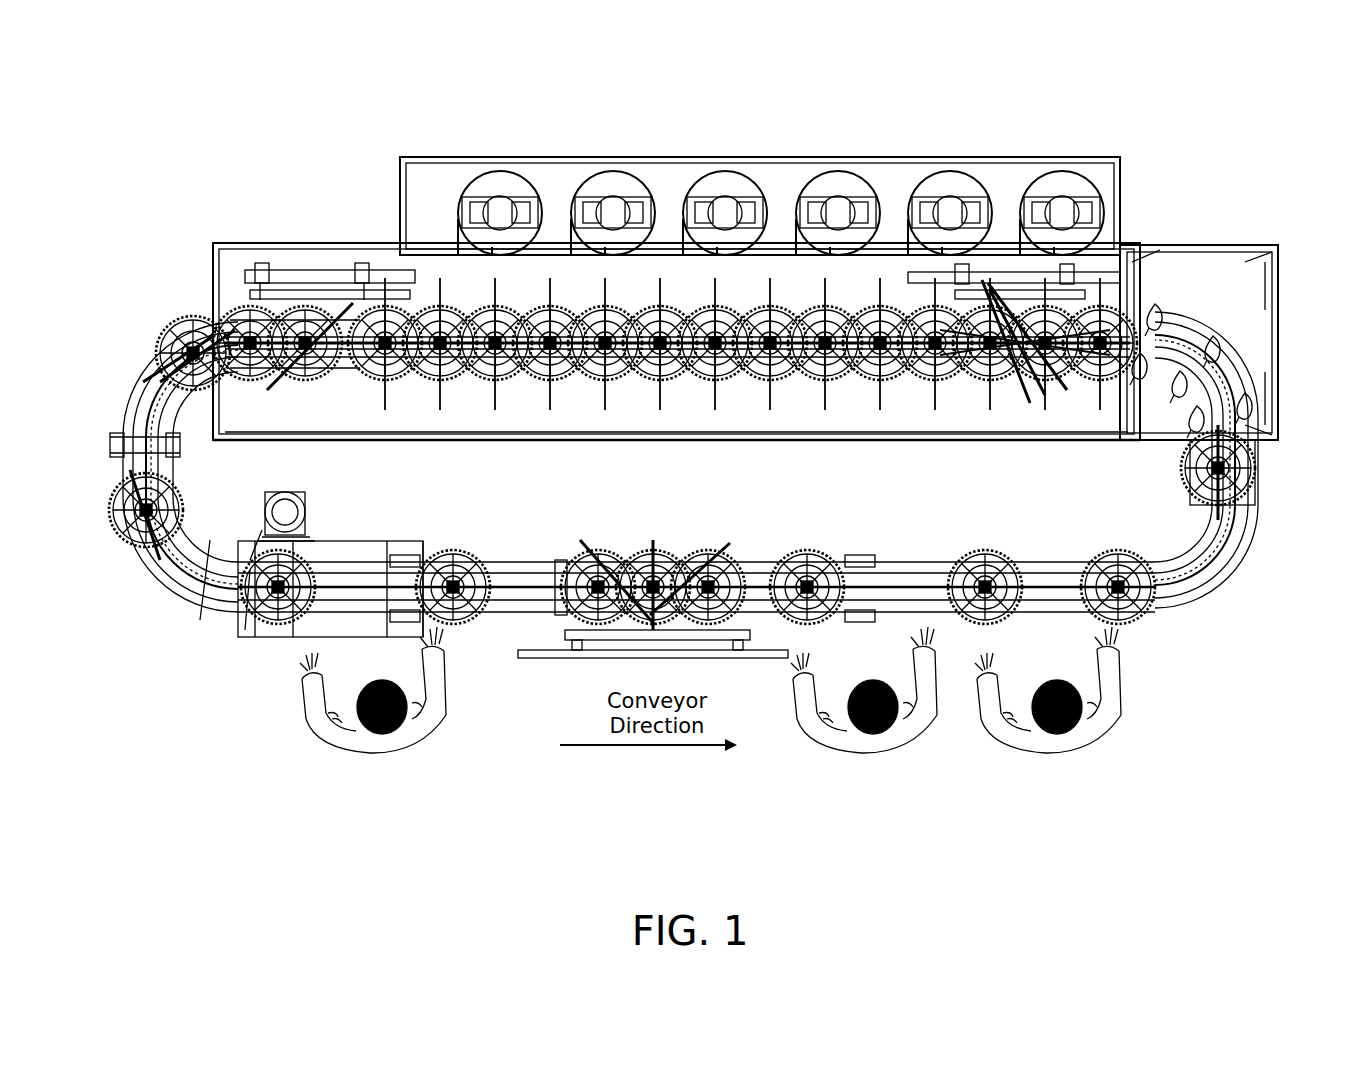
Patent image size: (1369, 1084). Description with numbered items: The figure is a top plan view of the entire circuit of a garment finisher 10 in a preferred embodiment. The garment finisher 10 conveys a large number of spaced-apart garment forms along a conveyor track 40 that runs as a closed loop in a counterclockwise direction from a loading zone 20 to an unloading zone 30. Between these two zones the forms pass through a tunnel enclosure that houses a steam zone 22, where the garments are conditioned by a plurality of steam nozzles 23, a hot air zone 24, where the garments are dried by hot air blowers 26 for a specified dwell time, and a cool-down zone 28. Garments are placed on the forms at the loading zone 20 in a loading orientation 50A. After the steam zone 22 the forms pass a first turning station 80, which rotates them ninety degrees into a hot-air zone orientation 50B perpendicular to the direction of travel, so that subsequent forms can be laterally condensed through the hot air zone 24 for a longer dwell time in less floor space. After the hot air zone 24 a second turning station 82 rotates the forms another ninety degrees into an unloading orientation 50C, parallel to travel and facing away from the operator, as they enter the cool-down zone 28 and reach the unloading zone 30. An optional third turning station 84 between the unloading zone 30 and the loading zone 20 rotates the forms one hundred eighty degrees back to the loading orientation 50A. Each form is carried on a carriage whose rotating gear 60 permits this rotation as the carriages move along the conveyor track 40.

The garment finisher 10 is at (134, 188).
The loading zone 20 is at (1140, 753).
The steam zone 22 is at (1258, 300).
The steam nozzles 23 is at (1212, 345).
The hot air zone 24 is at (858, 280).
The hot air blowers 26 is at (800, 165).
The cool-down zone 28 is at (318, 262).
The unloading zone 30 is at (238, 755).
The conveyor track 40 is at (118, 412).
The loading orientation 50A is at (1243, 540).
The hot-air zone orientation 50B is at (815, 395).
The unloading orientation 50C is at (150, 570).
The rotating gear 60 is at (1256, 470).
The first turning station 80 is at (1045, 412).
The second turning station 82 is at (296, 416).
The third turning station 84 is at (624, 526).